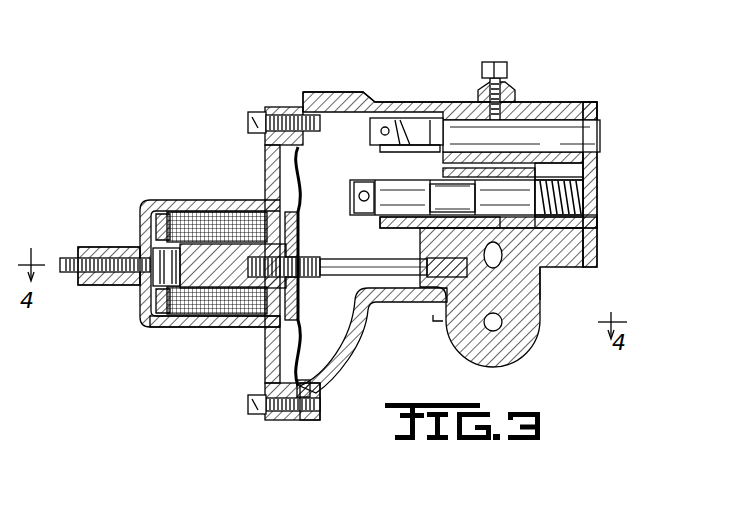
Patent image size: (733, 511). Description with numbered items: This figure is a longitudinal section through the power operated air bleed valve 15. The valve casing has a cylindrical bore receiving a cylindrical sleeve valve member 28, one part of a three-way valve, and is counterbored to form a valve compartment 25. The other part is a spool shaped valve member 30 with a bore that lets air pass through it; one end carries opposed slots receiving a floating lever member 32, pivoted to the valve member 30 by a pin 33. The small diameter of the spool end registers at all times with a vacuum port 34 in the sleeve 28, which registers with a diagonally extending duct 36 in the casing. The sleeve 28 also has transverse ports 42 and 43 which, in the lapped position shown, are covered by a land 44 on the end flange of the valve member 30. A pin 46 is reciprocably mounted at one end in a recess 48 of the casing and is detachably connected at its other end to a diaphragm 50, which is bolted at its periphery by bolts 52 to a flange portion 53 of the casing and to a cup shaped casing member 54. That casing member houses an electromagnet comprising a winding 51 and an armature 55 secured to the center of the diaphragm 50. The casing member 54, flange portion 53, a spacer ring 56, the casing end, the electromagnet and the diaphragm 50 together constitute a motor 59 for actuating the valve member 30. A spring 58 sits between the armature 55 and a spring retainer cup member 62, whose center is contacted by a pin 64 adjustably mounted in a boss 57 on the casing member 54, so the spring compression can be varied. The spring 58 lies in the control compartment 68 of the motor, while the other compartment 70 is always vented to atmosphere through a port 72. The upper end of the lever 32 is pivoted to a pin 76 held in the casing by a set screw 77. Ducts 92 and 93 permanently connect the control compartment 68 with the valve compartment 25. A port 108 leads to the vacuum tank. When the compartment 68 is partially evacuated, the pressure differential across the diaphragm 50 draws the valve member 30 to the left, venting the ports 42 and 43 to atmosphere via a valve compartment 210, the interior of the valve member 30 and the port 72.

The power operated air bleed valve 15 is at (441, 92).
The valve compartment 25 is at (593, 160).
The cylindrical sleeve valve member 28 is at (595, 196).
The spool shaped valve member 30 is at (413, 218).
The floating lever member 32 is at (383, 228).
The pin 33 is at (358, 195).
The vacuum port 34 is at (497, 260).
The diagonally extending duct 36 is at (532, 282).
The transversely extending port 42 is at (597, 170).
The transversely extending port 43 is at (597, 238).
The land 44 is at (597, 205).
The pin 46 is at (326, 280).
The recess 48 is at (440, 272).
The diaphragm 50 is at (300, 176).
The winding 51 is at (190, 225).
The bolts 52 is at (258, 414).
The flange portion 53 is at (309, 421).
The cup shaped casing member 54 is at (210, 327).
The armature 55 is at (165, 300).
The spacer ring 56 is at (285, 423).
The boss 57 is at (104, 254).
The spring 58 is at (160, 225).
The motor 59 is at (157, 200).
The spring retainer cup member 62 is at (150, 297).
The pin 64 is at (100, 285).
The control compartment 68 is at (274, 318).
The compartment 70 is at (343, 126).
The port 72 is at (400, 128).
The pin 76 is at (545, 130).
The set screw 77 is at (500, 71).
The duct 92 is at (304, 95).
The duct 93 is at (432, 150).
The port 108 is at (500, 332).
The valve compartment 210 is at (597, 218).